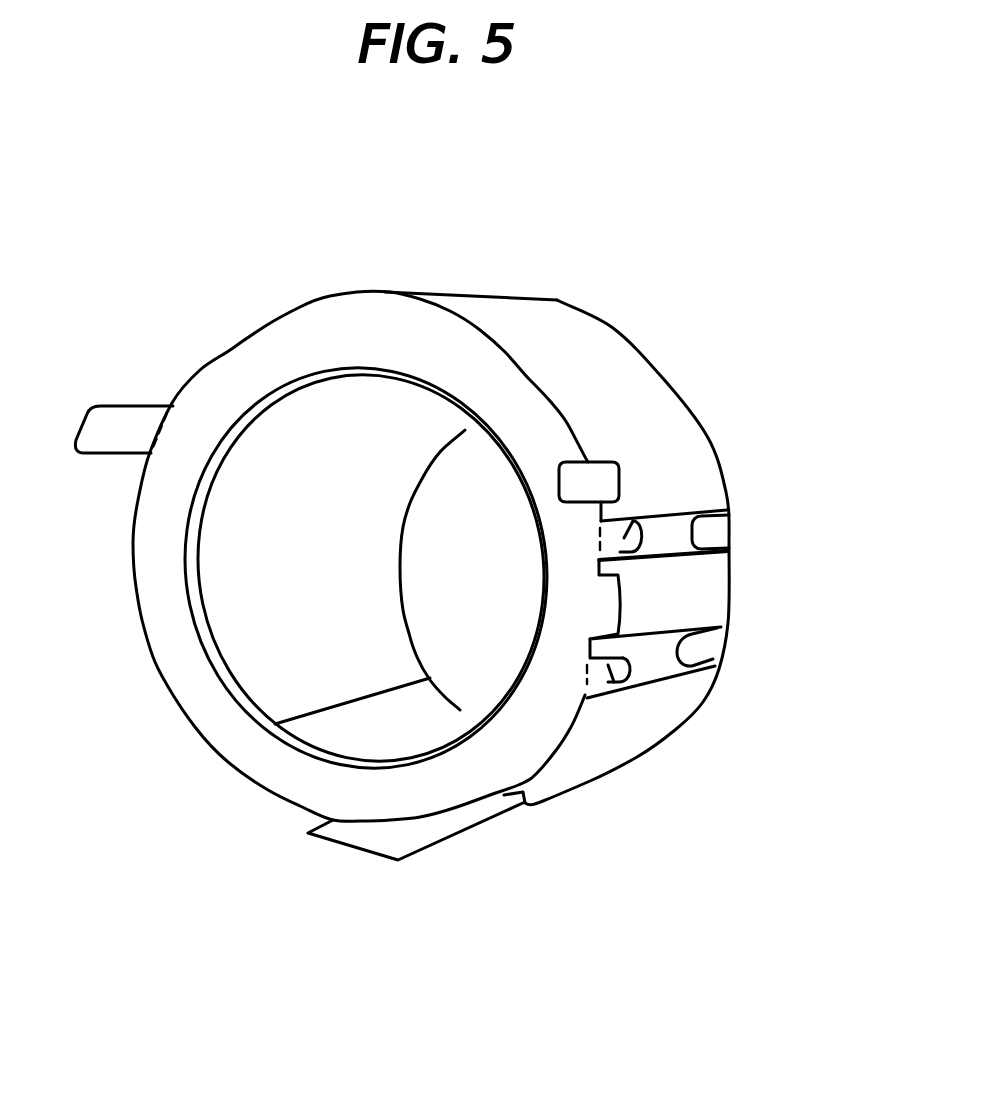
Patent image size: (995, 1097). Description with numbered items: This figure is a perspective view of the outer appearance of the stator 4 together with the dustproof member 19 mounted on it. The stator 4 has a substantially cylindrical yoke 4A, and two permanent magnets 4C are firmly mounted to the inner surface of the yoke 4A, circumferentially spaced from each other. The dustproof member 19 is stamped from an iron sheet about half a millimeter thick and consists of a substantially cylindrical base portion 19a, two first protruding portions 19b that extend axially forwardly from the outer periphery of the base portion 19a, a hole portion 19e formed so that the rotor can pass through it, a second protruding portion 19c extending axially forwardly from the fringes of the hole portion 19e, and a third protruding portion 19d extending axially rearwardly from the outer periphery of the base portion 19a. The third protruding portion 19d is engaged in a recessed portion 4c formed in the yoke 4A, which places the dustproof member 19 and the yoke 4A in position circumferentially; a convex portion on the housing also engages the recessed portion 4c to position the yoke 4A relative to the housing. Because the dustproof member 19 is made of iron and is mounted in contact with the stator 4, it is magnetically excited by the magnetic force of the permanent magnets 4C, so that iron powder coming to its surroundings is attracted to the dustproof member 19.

The stator 4 is at (430, 618).
The yoke 4A is at (600, 745).
The recessed portion 4c is at (680, 547).
The permanent magnets 4C is at (230, 605).
The dustproof member 19 is at (428, 558).
The base portion 19a is at (352, 318).
The first protruding portions 19b is at (118, 420).
The second protruding portion 19c is at (503, 696).
The third protruding portion 19d is at (628, 528).
The hole portion 19e is at (463, 688).